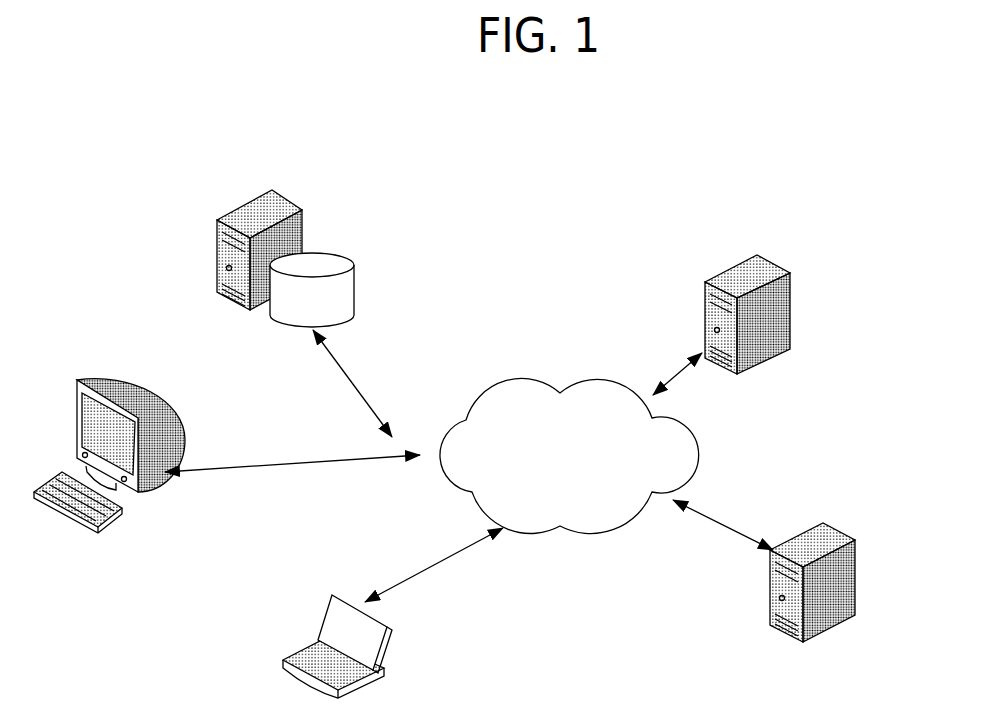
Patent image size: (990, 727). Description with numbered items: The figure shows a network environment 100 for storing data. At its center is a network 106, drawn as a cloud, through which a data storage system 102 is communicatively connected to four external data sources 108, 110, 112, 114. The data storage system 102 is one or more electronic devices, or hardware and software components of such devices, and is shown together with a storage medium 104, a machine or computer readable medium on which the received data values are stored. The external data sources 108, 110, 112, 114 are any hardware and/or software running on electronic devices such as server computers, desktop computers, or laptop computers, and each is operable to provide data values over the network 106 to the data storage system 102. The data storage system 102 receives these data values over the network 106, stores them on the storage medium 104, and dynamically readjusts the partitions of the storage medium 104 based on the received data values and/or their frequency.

The network environment 100 is at (184, 150).
The data storage system 102 is at (287, 198).
The storage medium 104 is at (355, 288).
The network 106 is at (578, 465).
The external data source 108 is at (123, 510).
The external data source 110 is at (404, 652).
The external data source 112 is at (788, 272).
The external data source 114 is at (853, 535).